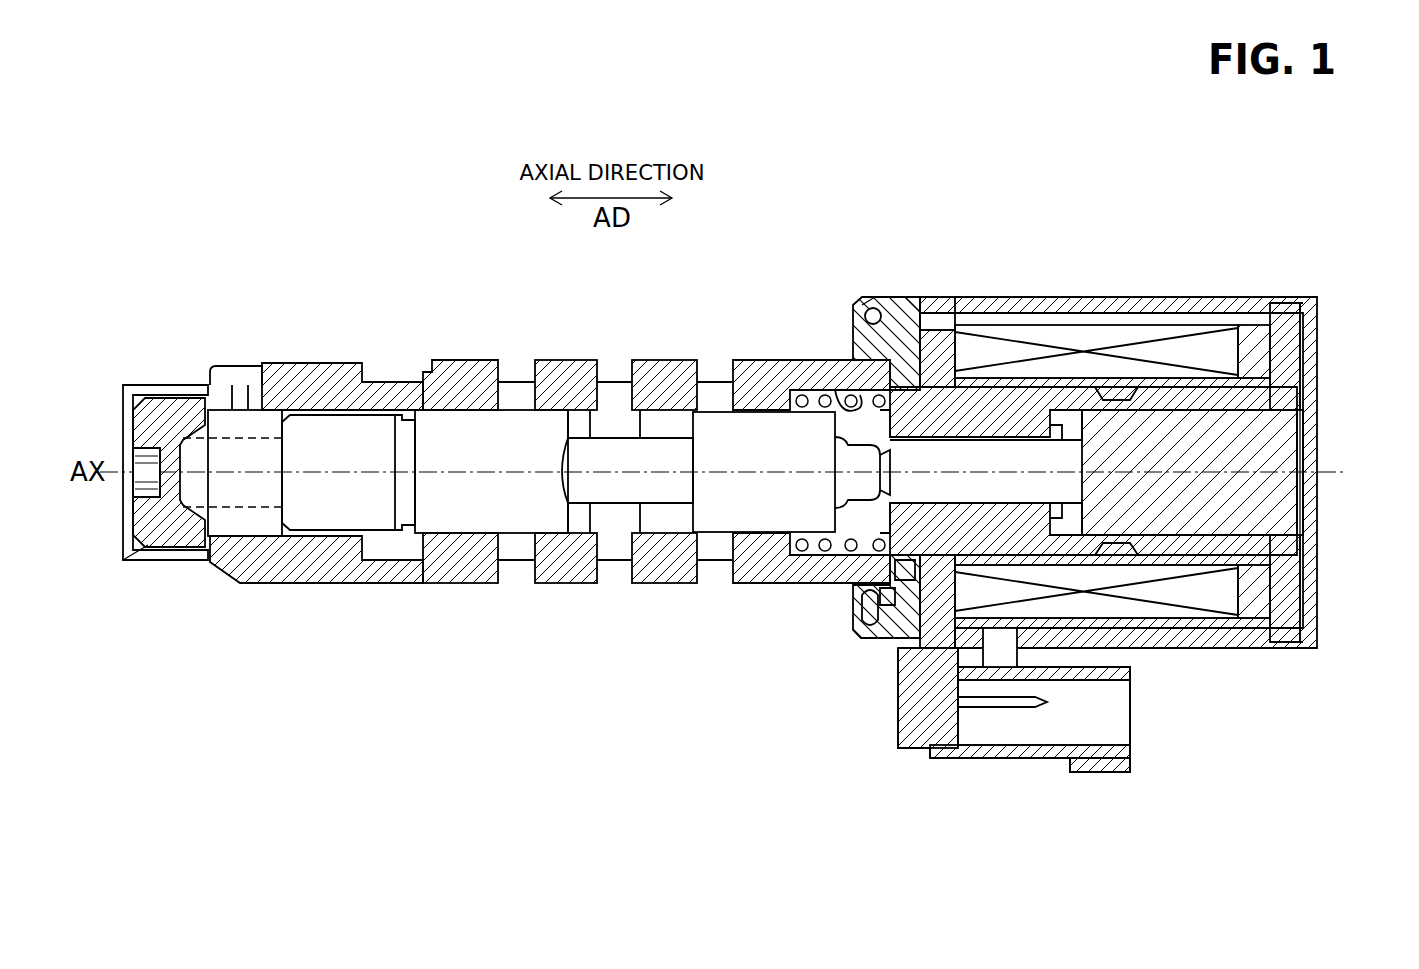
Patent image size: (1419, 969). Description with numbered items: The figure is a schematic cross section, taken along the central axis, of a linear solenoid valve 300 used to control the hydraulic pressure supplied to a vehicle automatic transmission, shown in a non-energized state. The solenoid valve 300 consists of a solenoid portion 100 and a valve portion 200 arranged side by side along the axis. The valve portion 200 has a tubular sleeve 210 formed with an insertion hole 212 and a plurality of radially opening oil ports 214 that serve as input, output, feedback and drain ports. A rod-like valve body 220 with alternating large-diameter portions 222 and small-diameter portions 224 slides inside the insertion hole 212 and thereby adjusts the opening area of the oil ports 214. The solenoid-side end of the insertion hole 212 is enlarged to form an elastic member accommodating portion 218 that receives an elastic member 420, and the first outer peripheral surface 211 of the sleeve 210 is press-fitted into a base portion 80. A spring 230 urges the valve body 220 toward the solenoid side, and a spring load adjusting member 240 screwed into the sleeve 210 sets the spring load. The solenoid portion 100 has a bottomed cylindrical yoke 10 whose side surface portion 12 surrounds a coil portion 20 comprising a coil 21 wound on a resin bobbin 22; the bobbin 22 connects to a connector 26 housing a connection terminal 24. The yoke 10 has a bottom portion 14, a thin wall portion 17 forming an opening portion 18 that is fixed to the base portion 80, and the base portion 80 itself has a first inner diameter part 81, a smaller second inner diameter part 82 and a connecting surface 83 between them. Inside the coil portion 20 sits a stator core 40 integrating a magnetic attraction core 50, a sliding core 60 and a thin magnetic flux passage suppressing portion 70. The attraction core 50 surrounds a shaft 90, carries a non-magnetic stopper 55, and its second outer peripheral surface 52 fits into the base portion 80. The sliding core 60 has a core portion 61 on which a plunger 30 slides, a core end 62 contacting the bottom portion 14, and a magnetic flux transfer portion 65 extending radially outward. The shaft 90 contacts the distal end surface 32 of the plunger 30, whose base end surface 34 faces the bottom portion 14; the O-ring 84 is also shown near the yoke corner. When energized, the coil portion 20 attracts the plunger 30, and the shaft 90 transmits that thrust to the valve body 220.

The solenoid valve 300 is at (296, 173).
The spring load adjusting member 240 is at (160, 425).
The spring 230 is at (222, 440).
The insertion hole 212 is at (320, 440).
The sleeve 210 is at (457, 382).
The large-diameter portion 222 is at (518, 440).
The small-diameter portion 224 is at (612, 452).
The valve body 220 is at (714, 452).
The elastic member accommodating portion 218 is at (842, 408).
The first outer peripheral surface 211 is at (892, 408).
The oil ports 214 is at (382, 590).
The elastic member 420 is at (800, 555).
The shaft 90 is at (920, 482).
The first inner diameter part 81 is at (870, 605).
The second inner diameter part 82 is at (905, 570).
The connecting surface 83 is at (886, 600).
The base portion 80 is at (836, 728).
The O-ring 84 is at (912, 312).
The opening portion 18 is at (880, 312).
The thin wall portion 17 is at (888, 308).
The second outer peripheral surface 52 is at (950, 330).
The side surface portion 12 is at (988, 310).
The distal end surface 32 is at (1040, 400).
The stator core 40 is at (1025, 203).
The magnetic attraction core 50 is at (1032, 333).
The magnetic flux passage suppressing portion 70 is at (1118, 395).
The sliding core 60 is at (1250, 362).
The yoke 10 is at (1340, 290).
The magnetic flux transfer portion 65 is at (1305, 347).
The bottom portion 14 is at (1318, 387).
The core end 62 is at (1300, 418).
The core portion 61 is at (1298, 453).
The base end surface 34 is at (1302, 480).
The plunger 30 is at (1262, 500).
The stopper 55 is at (1060, 522).
The coil 21 is at (1180, 645).
The bobbin 22 is at (1252, 640).
The coil portion 20 is at (1315, 712).
The connection terminal 24 is at (1017, 707).
The connector 26 is at (1138, 768).
The valve portion 200 is at (120, 828).
The solenoid portion 100 is at (1348, 828).